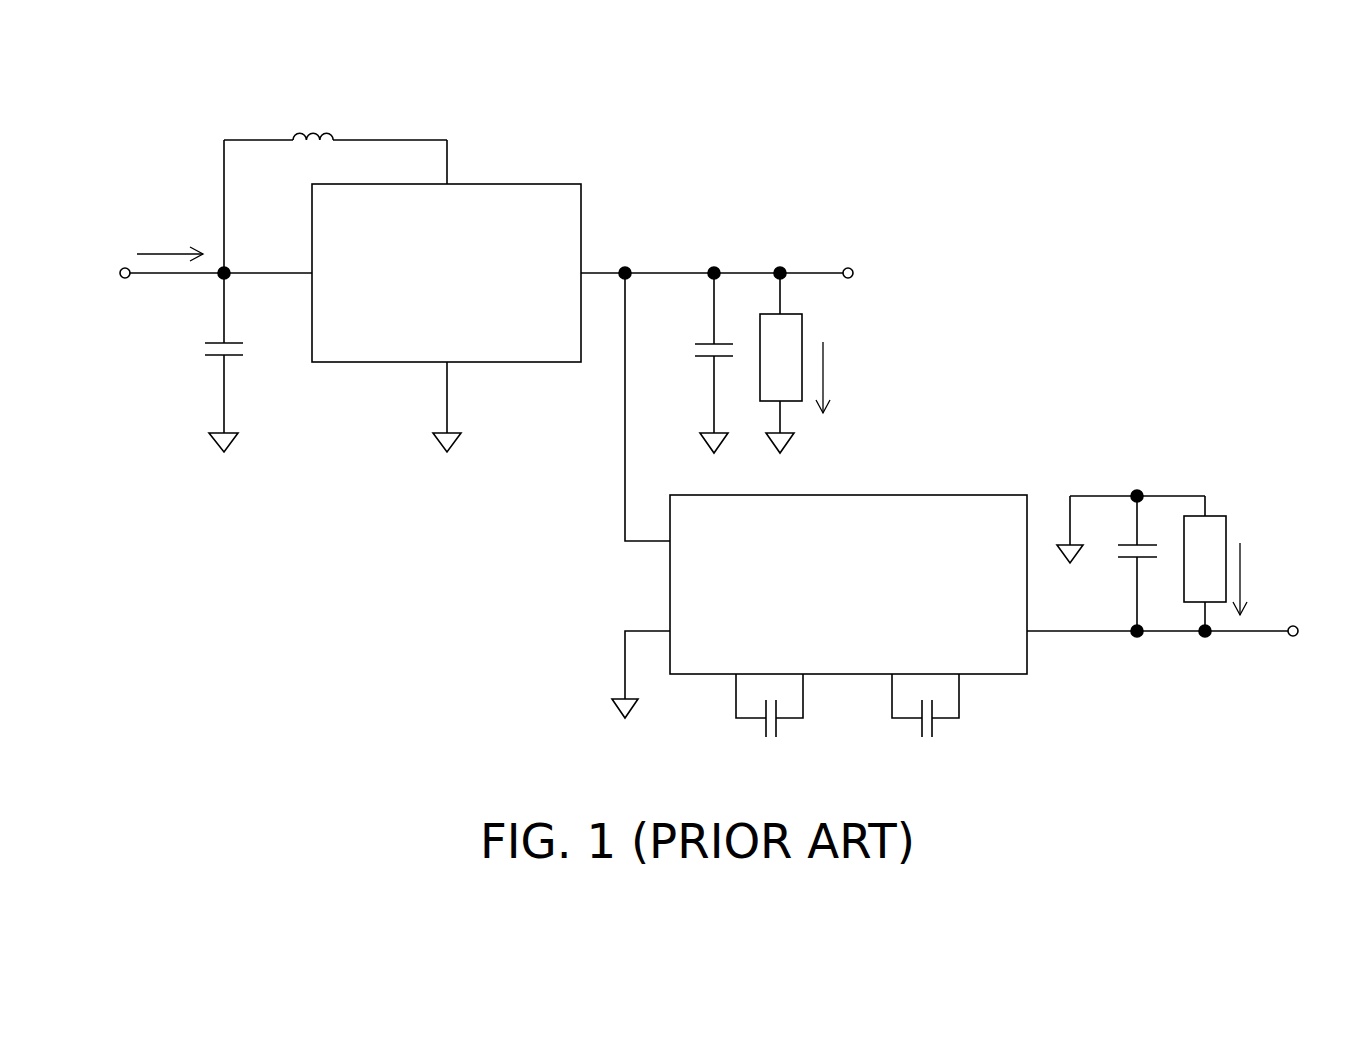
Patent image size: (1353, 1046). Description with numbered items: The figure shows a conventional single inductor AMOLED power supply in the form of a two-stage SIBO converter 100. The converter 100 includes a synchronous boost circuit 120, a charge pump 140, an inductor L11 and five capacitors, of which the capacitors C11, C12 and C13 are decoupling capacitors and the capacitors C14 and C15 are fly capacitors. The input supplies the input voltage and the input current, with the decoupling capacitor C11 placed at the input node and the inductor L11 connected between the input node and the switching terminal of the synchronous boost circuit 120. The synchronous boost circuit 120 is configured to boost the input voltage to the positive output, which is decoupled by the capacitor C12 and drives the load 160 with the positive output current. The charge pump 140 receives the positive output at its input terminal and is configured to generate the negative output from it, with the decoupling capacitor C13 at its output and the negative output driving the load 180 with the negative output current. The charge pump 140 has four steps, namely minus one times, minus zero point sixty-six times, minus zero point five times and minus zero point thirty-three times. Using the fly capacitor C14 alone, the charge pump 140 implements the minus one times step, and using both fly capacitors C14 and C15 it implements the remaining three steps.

The two-stage SIBO converter 100 is at (1337, 82).
The synchronous boost circuit 120 is at (518, 183).
The charge pump 140 is at (966, 495).
The load 160 is at (802, 322).
The load 180 is at (1227, 527).
The capacitor C11 is at (239, 296).
The capacitor C12 is at (699, 363).
The capacitor C13 is at (1124, 563).
The fly capacitor C14 is at (781, 711).
The fly capacitor C15 is at (937, 711).
The inductor L11 is at (335, 142).